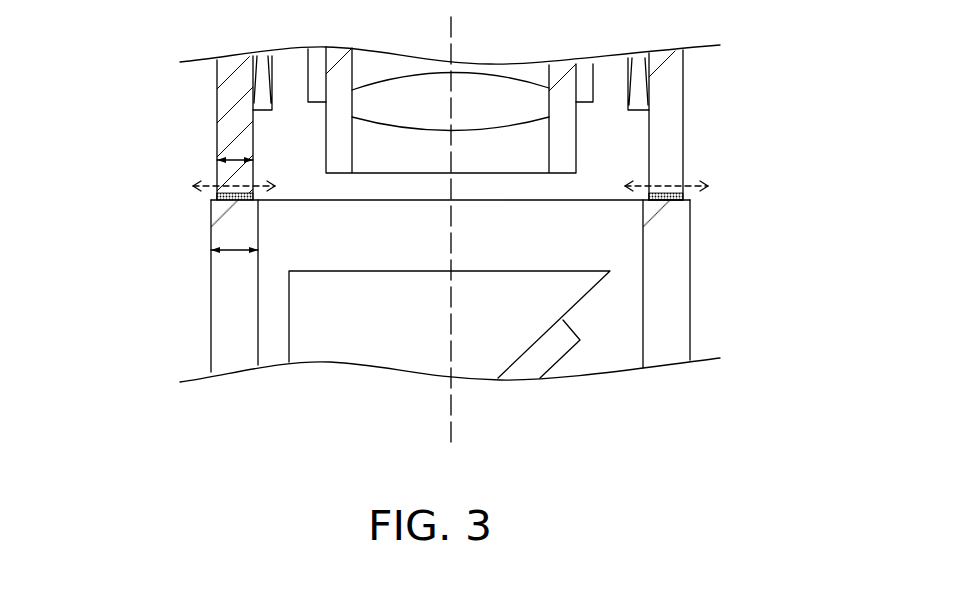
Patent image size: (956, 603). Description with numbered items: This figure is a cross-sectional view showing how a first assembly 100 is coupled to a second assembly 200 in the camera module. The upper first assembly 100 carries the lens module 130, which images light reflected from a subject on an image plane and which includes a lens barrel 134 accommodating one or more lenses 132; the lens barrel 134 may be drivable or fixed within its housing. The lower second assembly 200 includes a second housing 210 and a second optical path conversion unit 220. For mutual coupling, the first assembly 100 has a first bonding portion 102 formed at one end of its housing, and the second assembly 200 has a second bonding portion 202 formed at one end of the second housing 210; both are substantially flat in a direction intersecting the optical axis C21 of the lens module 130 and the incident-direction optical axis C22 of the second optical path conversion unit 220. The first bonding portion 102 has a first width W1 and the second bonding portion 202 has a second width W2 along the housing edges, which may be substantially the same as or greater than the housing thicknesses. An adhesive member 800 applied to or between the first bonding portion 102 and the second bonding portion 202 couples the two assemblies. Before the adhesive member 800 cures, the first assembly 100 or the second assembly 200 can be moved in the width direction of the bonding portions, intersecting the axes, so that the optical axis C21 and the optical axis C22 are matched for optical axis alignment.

The first assembly 100 is at (705, 86).
The first bonding portion 102 is at (665, 195).
The lens module 130 is at (319, 110).
The lenses 132 is at (380, 107).
The lens barrel 134 is at (335, 88).
The second assembly 200 is at (498, 291).
The second bonding portion 202 is at (668, 203).
The second housing 210 is at (668, 340).
The second optical path conversion unit 220 is at (543, 303).
The adhesive member 800 is at (677, 197).
The first width W1 is at (234, 161).
The second width W2 is at (234, 251).
The optical axis of the lens module C21 is at (455, 24).
The optical axis in incident direction of the second optical path conversion unit C22 is at (453, 432).